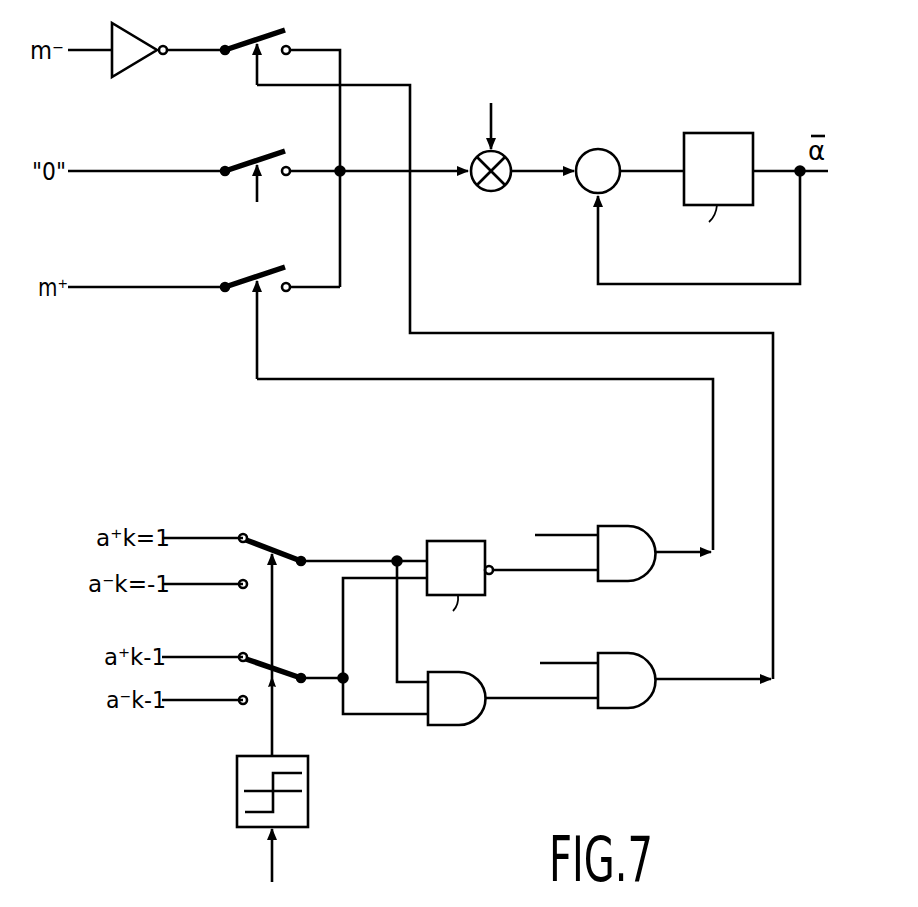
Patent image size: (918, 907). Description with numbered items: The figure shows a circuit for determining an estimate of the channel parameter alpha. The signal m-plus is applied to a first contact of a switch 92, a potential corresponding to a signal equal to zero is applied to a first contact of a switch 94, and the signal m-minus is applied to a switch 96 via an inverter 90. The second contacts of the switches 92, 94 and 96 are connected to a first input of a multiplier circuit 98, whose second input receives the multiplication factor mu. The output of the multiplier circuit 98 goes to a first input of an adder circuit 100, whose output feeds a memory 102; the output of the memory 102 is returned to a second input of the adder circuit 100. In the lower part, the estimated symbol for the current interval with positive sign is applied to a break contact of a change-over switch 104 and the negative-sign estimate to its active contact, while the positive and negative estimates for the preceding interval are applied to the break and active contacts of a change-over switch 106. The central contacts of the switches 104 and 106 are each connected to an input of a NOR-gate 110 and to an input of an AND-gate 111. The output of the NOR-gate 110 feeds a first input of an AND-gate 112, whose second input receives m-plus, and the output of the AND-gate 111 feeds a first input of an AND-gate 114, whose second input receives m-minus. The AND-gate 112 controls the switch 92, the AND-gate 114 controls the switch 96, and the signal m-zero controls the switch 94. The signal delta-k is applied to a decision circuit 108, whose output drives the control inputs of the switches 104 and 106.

The inverter 90 is at (144, 42).
The switch 92 is at (249, 277).
The switch 94 is at (249, 161).
The switch 96 is at (249, 43).
The multiplier circuit 98 is at (498, 190).
The adder circuit 100 is at (609, 149).
The memory 102 is at (736, 133).
The change-over switch 104 is at (258, 536).
The change-over switch 106 is at (288, 666).
The decision circuit 108 is at (308, 803).
The NOR-gate 110 is at (452, 541).
The AND-gate 111 is at (467, 726).
The AND-gate 112 is at (633, 516).
The AND-gate 114 is at (633, 642).